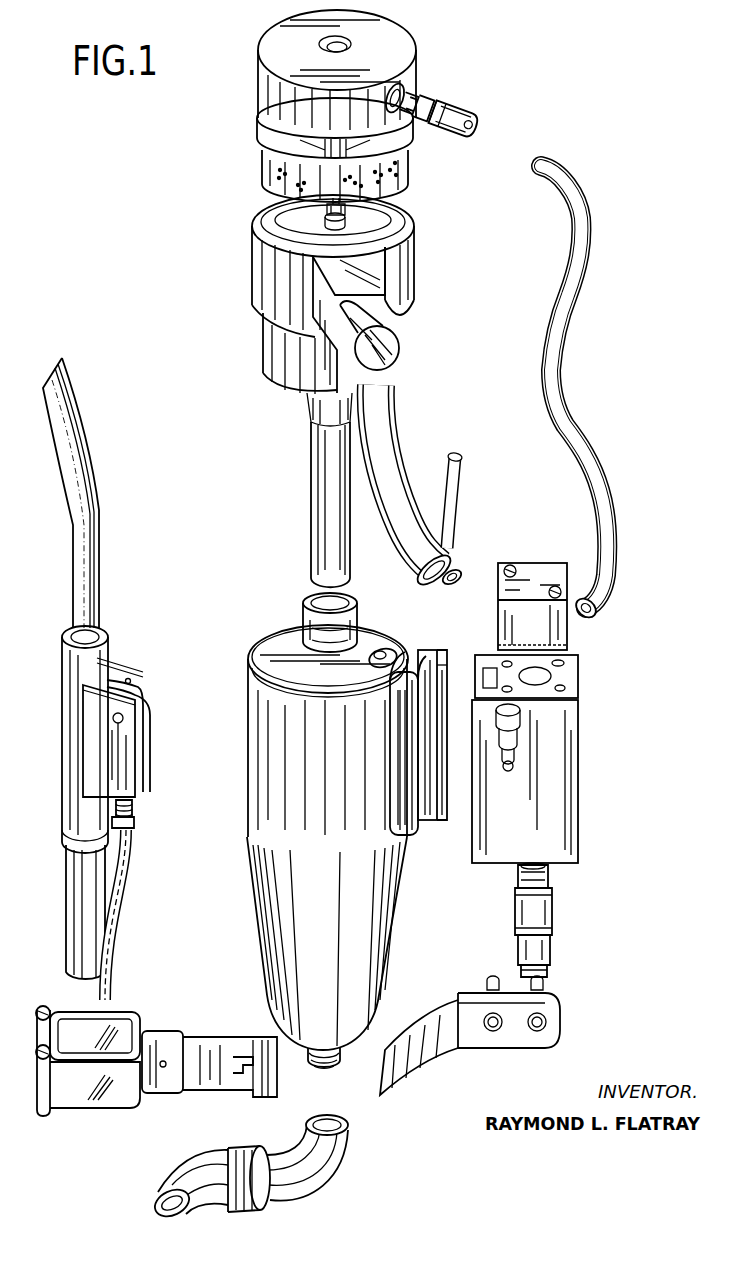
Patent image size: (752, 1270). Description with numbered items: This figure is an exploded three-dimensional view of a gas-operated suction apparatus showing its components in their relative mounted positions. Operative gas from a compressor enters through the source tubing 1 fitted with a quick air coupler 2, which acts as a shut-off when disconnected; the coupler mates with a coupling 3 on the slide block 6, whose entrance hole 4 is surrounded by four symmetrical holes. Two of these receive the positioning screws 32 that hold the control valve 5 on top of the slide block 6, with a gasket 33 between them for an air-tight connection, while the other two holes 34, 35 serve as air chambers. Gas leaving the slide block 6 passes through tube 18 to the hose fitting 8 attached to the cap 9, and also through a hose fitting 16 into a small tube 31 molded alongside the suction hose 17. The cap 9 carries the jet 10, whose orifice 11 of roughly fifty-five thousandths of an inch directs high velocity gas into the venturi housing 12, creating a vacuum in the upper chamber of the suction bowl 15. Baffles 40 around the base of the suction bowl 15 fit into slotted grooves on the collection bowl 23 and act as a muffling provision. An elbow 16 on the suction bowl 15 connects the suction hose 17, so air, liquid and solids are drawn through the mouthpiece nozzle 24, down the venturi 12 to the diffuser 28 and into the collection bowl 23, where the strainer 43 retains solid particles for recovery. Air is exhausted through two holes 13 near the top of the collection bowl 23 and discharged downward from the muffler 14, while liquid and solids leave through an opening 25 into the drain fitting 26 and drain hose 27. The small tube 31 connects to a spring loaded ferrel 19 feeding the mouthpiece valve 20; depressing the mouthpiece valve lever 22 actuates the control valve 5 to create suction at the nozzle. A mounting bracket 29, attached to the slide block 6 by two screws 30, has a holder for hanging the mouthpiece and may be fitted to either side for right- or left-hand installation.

The source tubing 1 is at (545, 968).
The quick air coupler 2 is at (553, 906).
The coupling 3 is at (552, 872).
The entrance hole 4 is at (580, 680).
The control valve 5 is at (568, 632).
The slide block 6 is at (560, 825).
The hose fitting 8 is at (485, 135).
The cap 9 is at (399, 55).
The jet 10 is at (327, 216).
The orifice 11 is at (344, 222).
The venturi housing 12 is at (318, 481).
The holes 13 is at (383, 648).
The muffler 14 is at (393, 777).
The suction bowl 15 is at (262, 268).
The elbow / hose fitting 16 is at (393, 349).
The suction hose 17 is at (392, 430).
The tube 18 is at (546, 343).
The spring loaded ferrel 19 is at (135, 808).
The mouthpiece valve 20 is at (72, 757).
The mouthpiece valve lever 22 is at (140, 686).
The collection bowl 23 is at (260, 772).
The mouthpiece nozzle 24 is at (62, 440).
The opening 25 is at (326, 1068).
The drain fitting 26 is at (296, 1152).
The drain hose 27 is at (200, 1170).
The diffuser 28 is at (305, 597).
The mounting bracket 29 is at (228, 1078).
The screws 30 is at (490, 983).
The small tube 31 is at (442, 470).
The positioning screws 32 is at (509, 562).
The gasket 33 is at (498, 648).
The hole 34 is at (515, 691).
The hole 35 is at (566, 661).
The baffles 40 is at (278, 372).
The strainer 43 is at (262, 163).